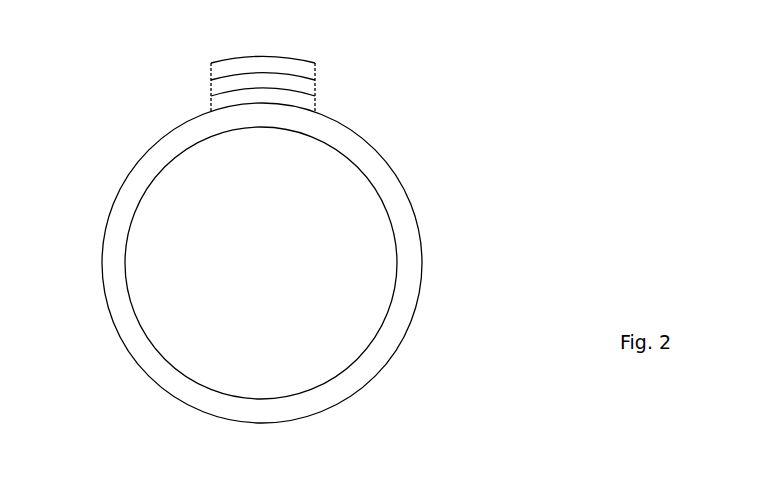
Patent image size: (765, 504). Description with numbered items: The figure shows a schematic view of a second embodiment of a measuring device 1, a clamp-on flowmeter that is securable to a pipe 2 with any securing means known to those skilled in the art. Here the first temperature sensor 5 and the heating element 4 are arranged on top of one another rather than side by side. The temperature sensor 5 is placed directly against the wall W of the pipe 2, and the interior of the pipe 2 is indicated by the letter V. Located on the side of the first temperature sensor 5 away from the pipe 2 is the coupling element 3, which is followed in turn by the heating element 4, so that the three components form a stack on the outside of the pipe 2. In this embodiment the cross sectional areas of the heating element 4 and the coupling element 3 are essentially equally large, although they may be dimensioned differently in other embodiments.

The measuring device 1 is at (91, 76).
The pipe 2 is at (143, 365).
The coupling element 3 is at (210, 87).
The heating element 4 is at (315, 68).
The first temperature sensor 5 is at (315, 107).
The volume / interior V is at (258, 289).
The wall W is at (292, 405).